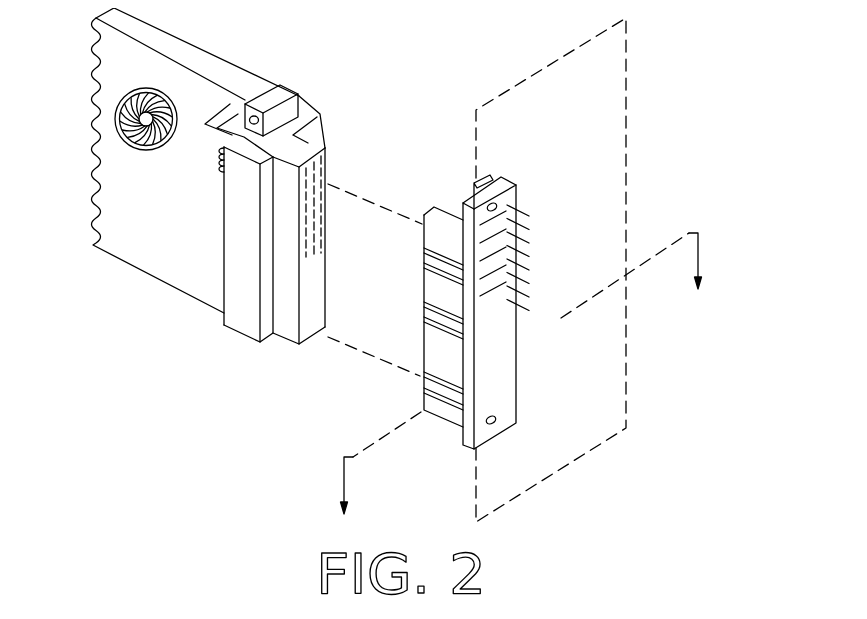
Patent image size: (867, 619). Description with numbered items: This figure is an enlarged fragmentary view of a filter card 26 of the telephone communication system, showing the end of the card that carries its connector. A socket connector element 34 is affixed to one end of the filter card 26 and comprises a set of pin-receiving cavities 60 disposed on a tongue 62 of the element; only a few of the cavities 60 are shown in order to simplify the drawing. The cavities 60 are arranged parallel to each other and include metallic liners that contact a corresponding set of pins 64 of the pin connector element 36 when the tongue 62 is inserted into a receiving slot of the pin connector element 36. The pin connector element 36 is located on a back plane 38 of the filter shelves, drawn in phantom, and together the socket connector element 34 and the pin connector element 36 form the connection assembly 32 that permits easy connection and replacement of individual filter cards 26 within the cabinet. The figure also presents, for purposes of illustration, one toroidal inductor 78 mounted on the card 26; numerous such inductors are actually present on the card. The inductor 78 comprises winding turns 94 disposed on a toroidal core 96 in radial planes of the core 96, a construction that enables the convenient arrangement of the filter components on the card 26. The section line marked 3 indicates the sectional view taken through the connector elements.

The filter card 26 is at (153, 27).
The inductor 78 is at (117, 104).
The winding turns 94 is at (118, 140).
The toroidal core 96 is at (168, 98).
The socket connector element 34 is at (323, 130).
The pin-receiving cavities 60 is at (326, 160).
The tongue 62 is at (281, 338).
The connection assembly 32 is at (328, 371).
The pin connector element 36 is at (504, 180).
The pins 64 is at (466, 196).
The back plane 38 is at (626, 70).
The section line 3- 3 is at (519, 383).